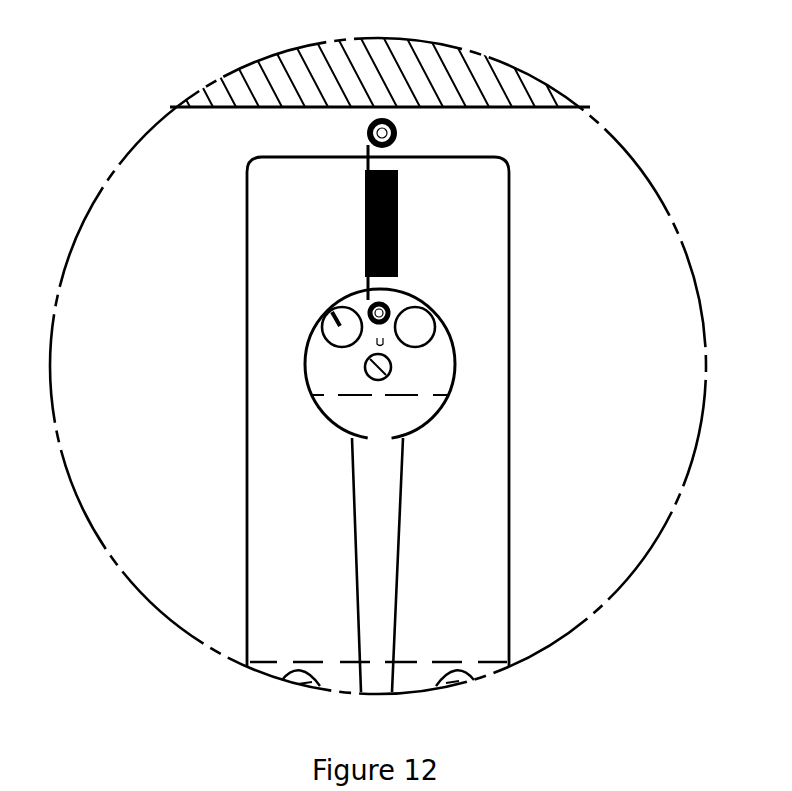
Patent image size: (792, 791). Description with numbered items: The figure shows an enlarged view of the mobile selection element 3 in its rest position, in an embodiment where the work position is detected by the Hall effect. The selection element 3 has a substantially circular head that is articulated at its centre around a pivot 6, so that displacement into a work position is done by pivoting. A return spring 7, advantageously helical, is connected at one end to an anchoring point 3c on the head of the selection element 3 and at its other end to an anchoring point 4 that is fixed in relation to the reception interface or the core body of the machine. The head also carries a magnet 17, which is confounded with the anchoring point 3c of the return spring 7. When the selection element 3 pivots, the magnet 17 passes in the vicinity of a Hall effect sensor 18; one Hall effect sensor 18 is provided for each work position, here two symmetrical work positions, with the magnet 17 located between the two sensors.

The selection element 3 is at (447, 407).
The anchoring point 3c is at (368, 298).
The anchoring point 4 is at (400, 133).
The pivot 6 is at (364, 380).
The return spring 7 is at (400, 213).
The magnet 17 is at (390, 304).
The Hall effect sensor 18 is at (322, 346).